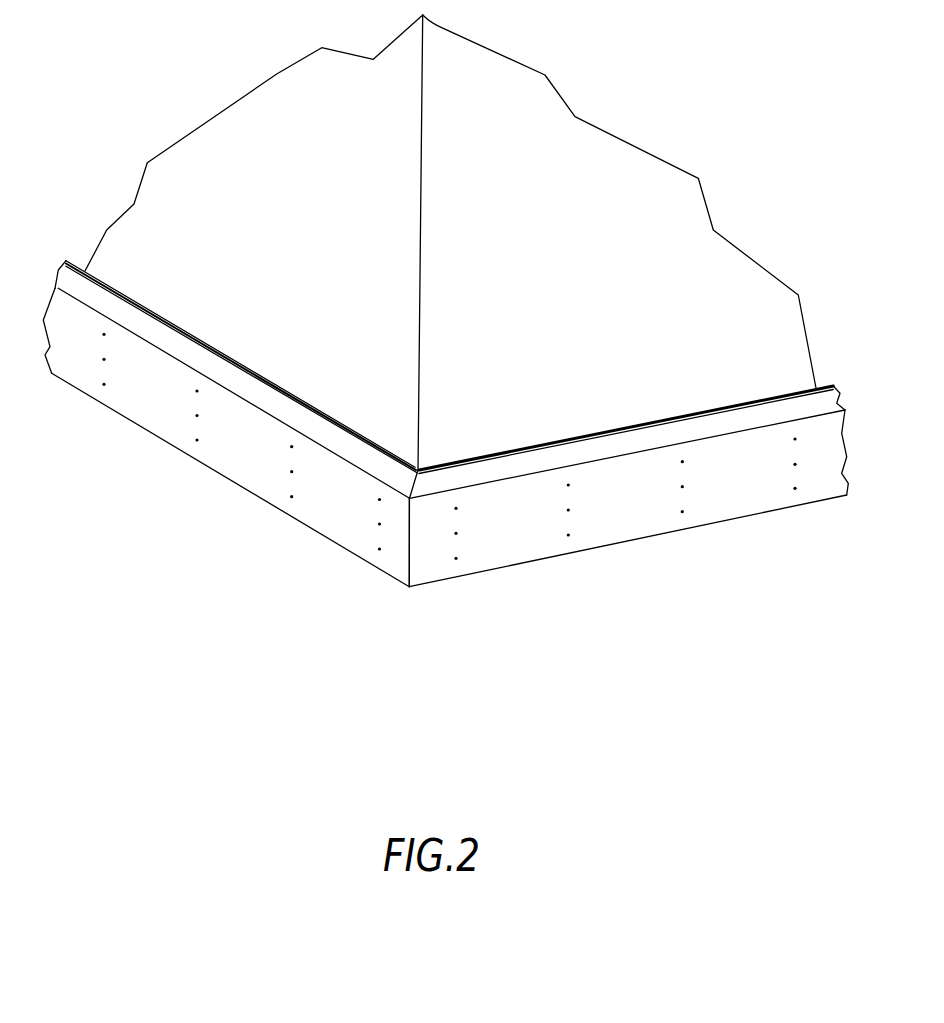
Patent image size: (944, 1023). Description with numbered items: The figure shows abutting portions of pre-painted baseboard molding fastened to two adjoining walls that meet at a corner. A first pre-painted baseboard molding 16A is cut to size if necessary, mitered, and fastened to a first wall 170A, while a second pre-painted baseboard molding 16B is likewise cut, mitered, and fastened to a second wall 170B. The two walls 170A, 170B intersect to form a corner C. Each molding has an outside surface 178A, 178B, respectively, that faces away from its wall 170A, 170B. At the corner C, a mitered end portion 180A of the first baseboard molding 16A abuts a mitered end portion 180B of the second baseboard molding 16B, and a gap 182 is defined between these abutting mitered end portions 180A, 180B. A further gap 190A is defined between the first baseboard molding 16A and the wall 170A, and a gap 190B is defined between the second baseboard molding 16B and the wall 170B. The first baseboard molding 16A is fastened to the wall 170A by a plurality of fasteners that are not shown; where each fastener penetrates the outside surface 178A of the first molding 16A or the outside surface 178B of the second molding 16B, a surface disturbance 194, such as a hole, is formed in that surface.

The first wall 170A is at (307, 185).
The second wall 170B is at (617, 252).
The corner C is at (423, 287).
The gap 190A is at (332, 413).
The gap 190B is at (584, 433).
The gap 182 is at (415, 487).
The first pre-painted baseboard molding 16A is at (262, 446).
The second pre-painted baseboard molding 16B is at (750, 490).
The outside surface 178A is at (262, 472).
The outside surface 178B is at (630, 515).
The abutting mitered end portion 180A is at (402, 542).
The abutting mitered end portion 180B is at (419, 543).
The surface disturbance 194 is at (380, 549).